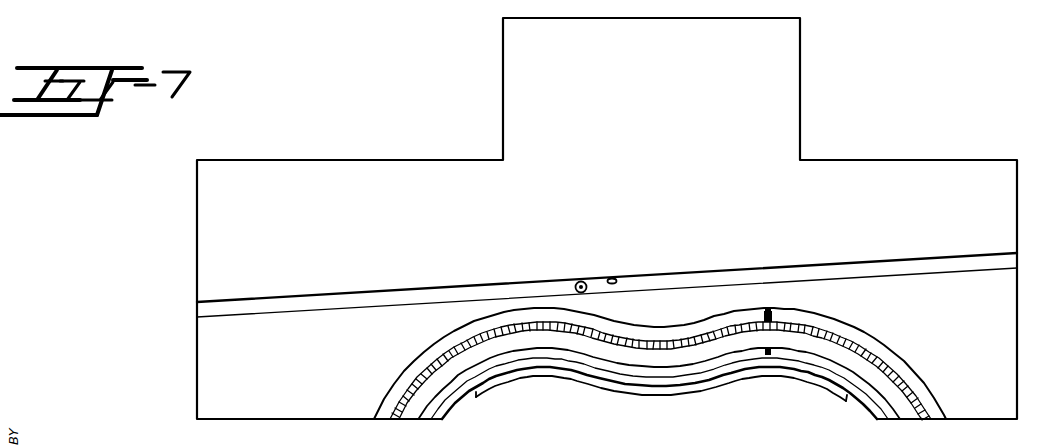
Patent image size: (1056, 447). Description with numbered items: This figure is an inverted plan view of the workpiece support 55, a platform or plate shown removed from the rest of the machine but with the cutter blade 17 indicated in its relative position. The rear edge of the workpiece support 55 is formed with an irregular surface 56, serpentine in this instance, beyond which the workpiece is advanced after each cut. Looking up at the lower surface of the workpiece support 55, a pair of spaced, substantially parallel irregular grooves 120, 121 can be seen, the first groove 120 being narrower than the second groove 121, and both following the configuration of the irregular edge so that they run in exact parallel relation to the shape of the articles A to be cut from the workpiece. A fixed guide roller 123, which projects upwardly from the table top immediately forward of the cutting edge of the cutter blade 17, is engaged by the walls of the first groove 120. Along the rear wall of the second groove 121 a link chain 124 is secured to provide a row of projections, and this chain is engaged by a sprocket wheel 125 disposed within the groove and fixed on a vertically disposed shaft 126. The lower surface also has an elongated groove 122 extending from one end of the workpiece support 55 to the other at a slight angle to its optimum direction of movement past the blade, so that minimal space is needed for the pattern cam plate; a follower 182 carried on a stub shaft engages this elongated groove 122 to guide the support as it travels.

The workpiece support 55 is at (192, 200).
The irregular surface 56 is at (441, 410).
The cutter blade 17 is at (771, 372).
The first groove 120 is at (648, 376).
The second groove 121 is at (636, 329).
The elongated groove 122 is at (617, 279).
The fixed guide roller 123 is at (771, 351).
The link chain 124 is at (881, 353).
The sprocket wheel 125 is at (771, 311).
The vertically disposed shaft 126 is at (766, 311).
The follower 182 is at (580, 281).
The articles A is at (817, 386).